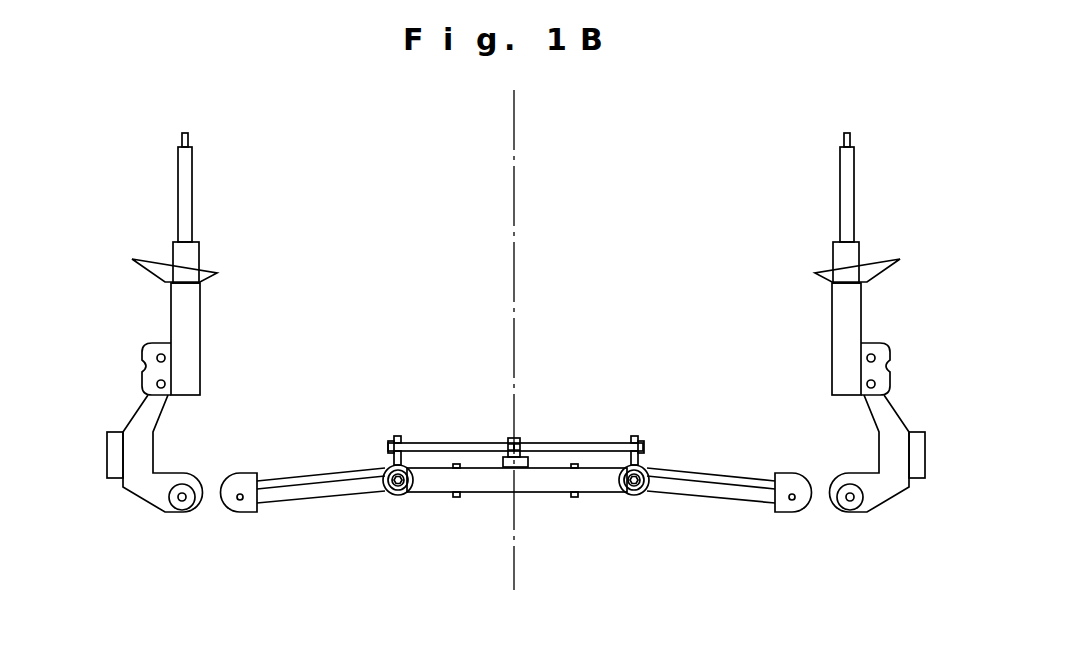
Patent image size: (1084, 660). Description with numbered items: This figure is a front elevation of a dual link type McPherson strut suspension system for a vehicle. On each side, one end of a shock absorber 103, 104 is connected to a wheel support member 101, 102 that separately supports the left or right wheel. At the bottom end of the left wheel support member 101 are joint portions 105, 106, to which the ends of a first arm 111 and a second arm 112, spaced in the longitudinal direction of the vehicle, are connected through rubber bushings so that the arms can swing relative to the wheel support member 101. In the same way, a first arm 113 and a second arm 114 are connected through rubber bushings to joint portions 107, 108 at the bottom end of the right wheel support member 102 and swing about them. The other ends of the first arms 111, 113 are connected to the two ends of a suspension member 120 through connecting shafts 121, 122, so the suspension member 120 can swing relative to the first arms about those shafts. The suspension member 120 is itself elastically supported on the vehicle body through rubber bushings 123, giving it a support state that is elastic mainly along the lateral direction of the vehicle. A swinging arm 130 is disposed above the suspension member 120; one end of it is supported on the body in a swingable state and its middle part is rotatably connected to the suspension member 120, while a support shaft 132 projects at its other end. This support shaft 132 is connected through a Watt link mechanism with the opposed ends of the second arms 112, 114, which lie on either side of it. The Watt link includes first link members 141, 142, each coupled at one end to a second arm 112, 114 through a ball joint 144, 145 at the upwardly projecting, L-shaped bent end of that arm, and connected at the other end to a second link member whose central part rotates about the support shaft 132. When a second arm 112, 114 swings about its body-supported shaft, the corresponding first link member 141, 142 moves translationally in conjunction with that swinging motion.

The wheel support member 101 is at (112, 437).
The wheel support member 102 is at (918, 430).
The shock absorber 103 is at (190, 143).
The shock absorber 104 is at (852, 142).
The joint portion 105 is at (232, 514).
The joint portion 106 is at (245, 473).
The joint portion 107 is at (852, 511).
The joint portion 108 is at (850, 473).
The first arm 111 is at (310, 497).
The second arm 112 is at (322, 476).
The first arm 113 is at (700, 494).
The second arm 114 is at (723, 477).
The suspension member 120 is at (494, 488).
The connecting shaft 121 is at (395, 493).
The connecting shaft 122 is at (628, 495).
The rubber bushing 123 is at (458, 498).
The swinging arm 130 is at (521, 448).
The support shaft 132 is at (510, 438).
The first link member 141 is at (435, 443).
The first link member 142 is at (565, 443).
The ball joint 144 is at (397, 436).
The ball joint 145 is at (635, 436).